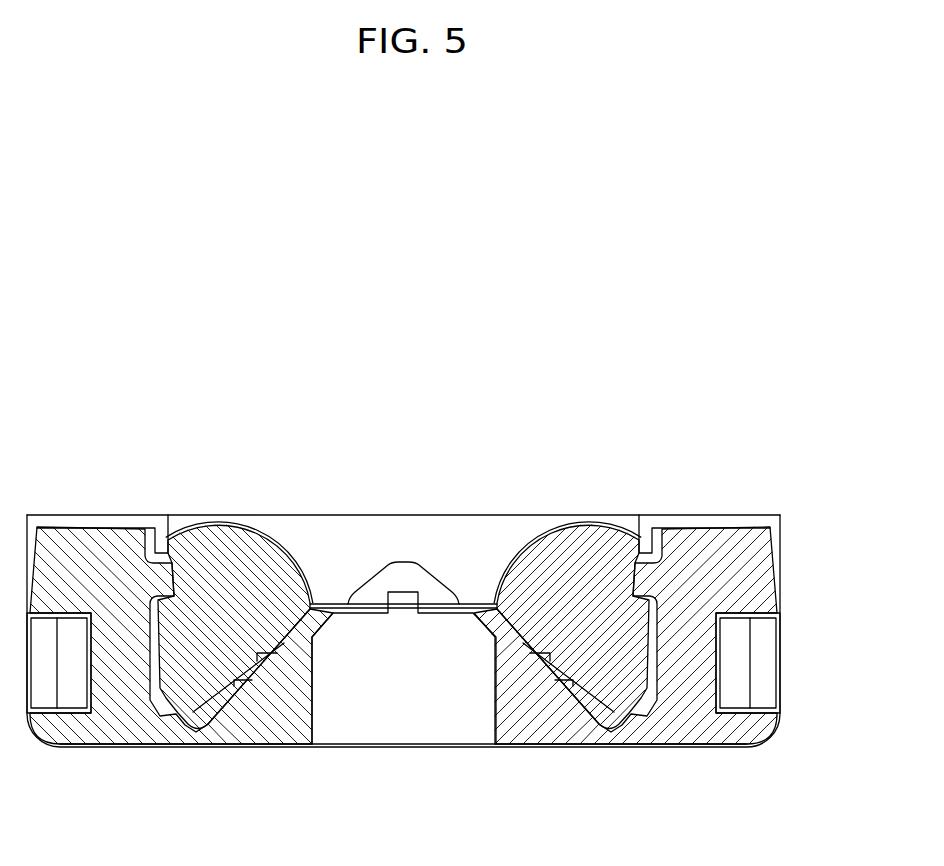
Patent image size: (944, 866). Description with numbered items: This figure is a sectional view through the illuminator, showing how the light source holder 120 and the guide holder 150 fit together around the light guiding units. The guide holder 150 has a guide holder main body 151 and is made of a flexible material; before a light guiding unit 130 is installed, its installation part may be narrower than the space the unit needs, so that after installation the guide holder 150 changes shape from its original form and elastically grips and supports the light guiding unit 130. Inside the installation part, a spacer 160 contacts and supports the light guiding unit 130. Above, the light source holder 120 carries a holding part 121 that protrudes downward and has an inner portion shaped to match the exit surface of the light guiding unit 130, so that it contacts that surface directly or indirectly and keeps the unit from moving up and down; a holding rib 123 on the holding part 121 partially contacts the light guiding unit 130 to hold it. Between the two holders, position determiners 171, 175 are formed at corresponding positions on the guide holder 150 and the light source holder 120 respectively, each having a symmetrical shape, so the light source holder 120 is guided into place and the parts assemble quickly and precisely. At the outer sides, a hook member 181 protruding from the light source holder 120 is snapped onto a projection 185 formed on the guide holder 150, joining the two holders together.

The light source holder 120 is at (347, 545).
The holding part 121 is at (208, 530).
The holding rib 123 is at (258, 548).
The light guiding unit 130 is at (580, 543).
The guide holder 150 is at (662, 760).
The guide holder main body 151 is at (550, 730).
The spacer 160 is at (285, 645).
The position determiner 171 is at (400, 568).
The position determiner 175 is at (410, 612).
The hook member 181 is at (738, 655).
The projection 185 is at (777, 712).